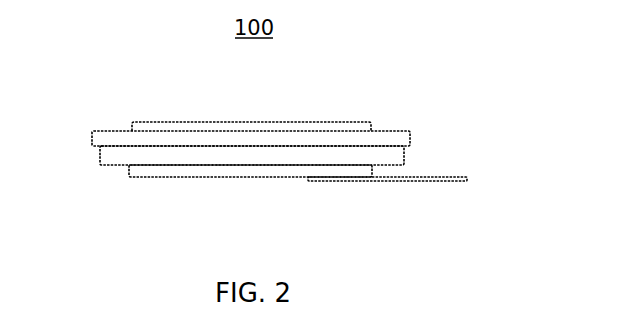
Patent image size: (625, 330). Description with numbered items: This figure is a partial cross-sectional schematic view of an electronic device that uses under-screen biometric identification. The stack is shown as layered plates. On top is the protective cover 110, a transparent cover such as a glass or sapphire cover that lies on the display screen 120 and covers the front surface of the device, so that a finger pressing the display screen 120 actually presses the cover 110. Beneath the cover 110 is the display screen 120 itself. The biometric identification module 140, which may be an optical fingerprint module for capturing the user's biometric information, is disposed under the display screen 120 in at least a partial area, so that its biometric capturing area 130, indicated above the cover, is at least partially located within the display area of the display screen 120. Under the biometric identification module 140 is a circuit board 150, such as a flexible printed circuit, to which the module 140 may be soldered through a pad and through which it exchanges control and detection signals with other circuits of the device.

The protective cover 110 is at (410, 137).
The display screen 120 is at (100, 158).
The biometric capturing area 130 is at (252, 122).
The biometric identification module 140 is at (240, 172).
The circuit board 150 is at (428, 183).